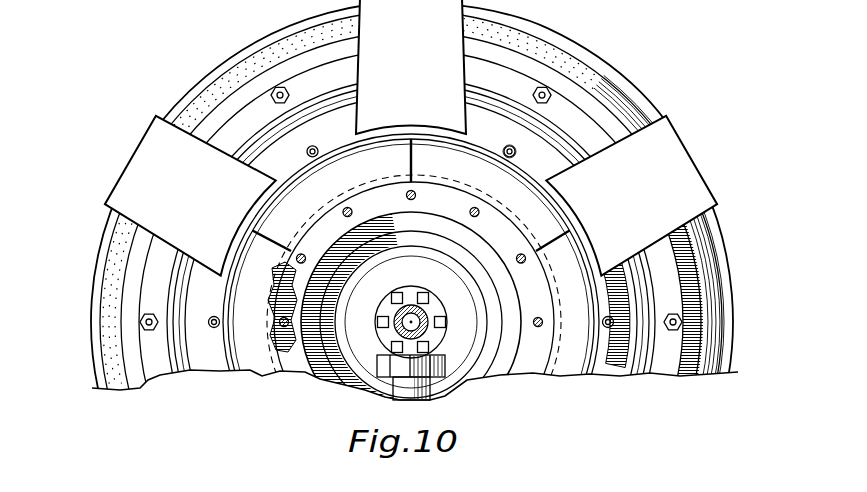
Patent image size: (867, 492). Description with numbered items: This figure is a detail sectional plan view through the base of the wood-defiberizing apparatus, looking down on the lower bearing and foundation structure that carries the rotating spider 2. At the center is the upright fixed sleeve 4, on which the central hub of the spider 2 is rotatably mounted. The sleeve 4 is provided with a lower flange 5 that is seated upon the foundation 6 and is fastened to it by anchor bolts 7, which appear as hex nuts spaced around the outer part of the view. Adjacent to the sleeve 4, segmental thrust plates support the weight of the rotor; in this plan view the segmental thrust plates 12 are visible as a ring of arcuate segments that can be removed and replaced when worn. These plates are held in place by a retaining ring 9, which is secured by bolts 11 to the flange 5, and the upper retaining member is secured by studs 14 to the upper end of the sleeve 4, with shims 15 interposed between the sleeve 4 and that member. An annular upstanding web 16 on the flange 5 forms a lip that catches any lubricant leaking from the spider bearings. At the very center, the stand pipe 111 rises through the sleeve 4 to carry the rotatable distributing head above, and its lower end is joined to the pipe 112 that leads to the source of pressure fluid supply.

The spider 2 is at (115, 190).
The upright fixed sleeve 4 is at (303, 378).
The lower flange 5 is at (148, 385).
The foundation 6 is at (712, 290).
The anchor bolts 7 is at (270, 90).
The retaining ring 9 is at (510, 144).
The bolts 11 is at (535, 142).
The thrust plates 12 is at (380, 158).
The studs 14 is at (538, 318).
The shims 15 is at (303, 238).
The annular upstanding web 16 is at (583, 155).
The stand pipe 111 is at (432, 315).
The pipe 112 is at (411, 398).